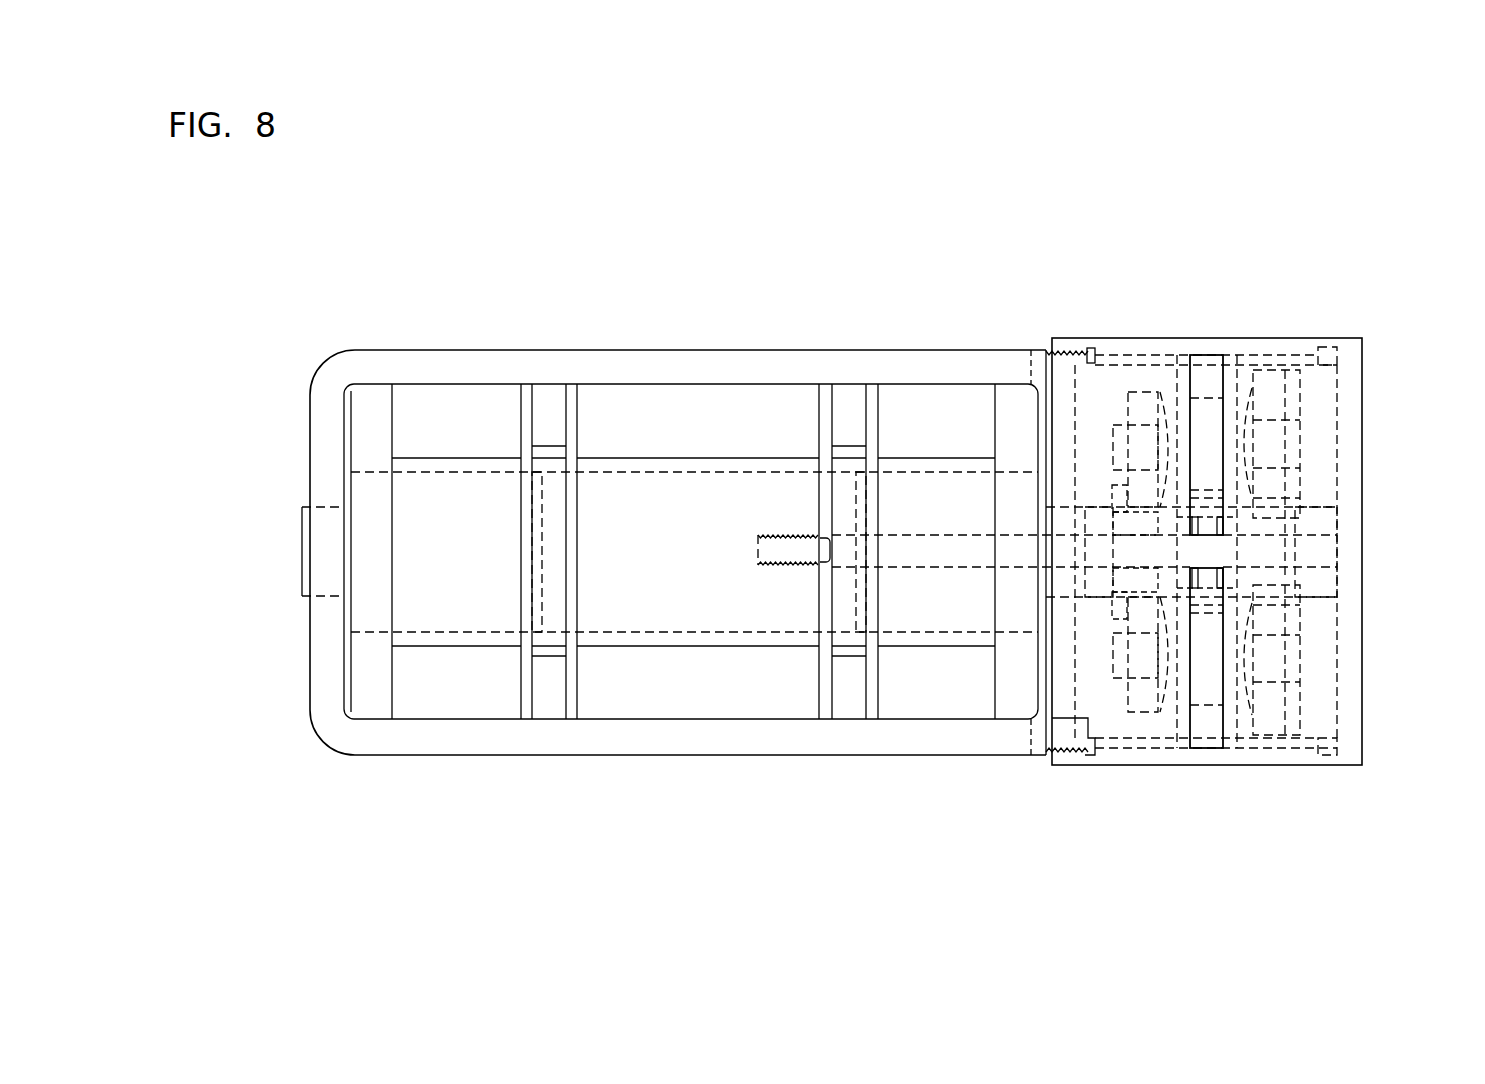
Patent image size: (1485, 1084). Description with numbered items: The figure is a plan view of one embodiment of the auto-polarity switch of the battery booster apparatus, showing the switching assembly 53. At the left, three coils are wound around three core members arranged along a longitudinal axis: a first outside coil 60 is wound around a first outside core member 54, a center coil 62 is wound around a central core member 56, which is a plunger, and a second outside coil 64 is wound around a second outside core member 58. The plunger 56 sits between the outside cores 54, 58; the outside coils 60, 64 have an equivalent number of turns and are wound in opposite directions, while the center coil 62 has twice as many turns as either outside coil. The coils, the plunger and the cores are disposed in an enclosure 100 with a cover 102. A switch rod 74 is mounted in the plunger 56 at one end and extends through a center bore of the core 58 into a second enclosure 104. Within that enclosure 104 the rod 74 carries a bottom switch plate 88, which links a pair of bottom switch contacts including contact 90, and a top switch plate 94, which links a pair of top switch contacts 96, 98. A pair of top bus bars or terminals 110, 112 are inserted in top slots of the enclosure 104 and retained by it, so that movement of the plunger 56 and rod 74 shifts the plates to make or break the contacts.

The switching assembly 53 is at (873, 277).
The outside core member 54 is at (469, 566).
The central core member 56 is at (687, 566).
The outside core member 58 is at (947, 512).
The first outside coil 60 is at (444, 422).
The center coil 62 is at (685, 412).
The second outside coil 64 is at (965, 407).
The switch rod 74 is at (947, 562).
The bottom switch plate 88 is at (1122, 492).
The bottom switch contact 90 is at (1142, 402).
The top switch plate 94 is at (1295, 490).
The top switch contact 96 is at (1273, 717).
The top switch contact 98 is at (1270, 390).
The enclosure 100 is at (575, 738).
The cover 102 is at (1017, 695).
The enclosure 104 is at (1362, 683).
The top bus bar 110 is at (1210, 728).
The top bus bar 112 is at (1208, 376).